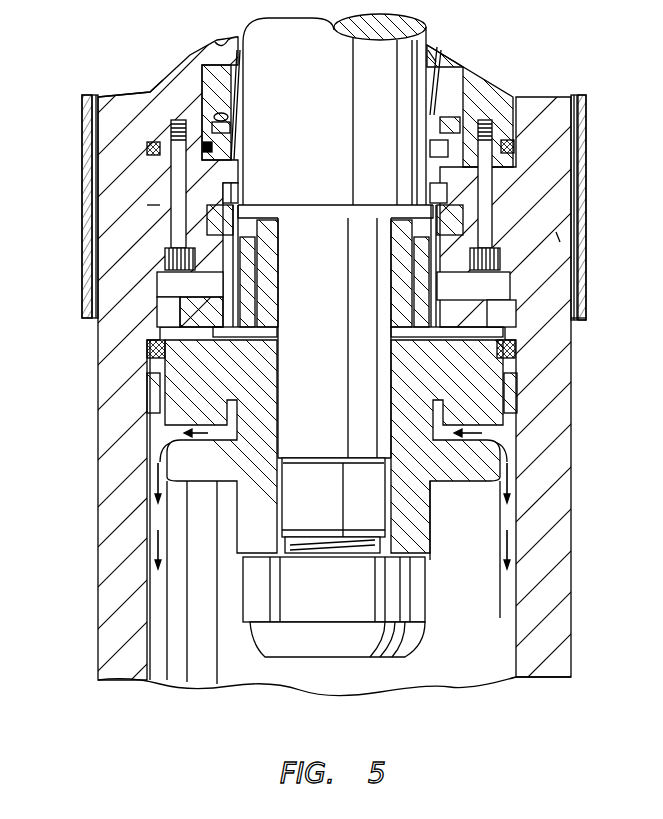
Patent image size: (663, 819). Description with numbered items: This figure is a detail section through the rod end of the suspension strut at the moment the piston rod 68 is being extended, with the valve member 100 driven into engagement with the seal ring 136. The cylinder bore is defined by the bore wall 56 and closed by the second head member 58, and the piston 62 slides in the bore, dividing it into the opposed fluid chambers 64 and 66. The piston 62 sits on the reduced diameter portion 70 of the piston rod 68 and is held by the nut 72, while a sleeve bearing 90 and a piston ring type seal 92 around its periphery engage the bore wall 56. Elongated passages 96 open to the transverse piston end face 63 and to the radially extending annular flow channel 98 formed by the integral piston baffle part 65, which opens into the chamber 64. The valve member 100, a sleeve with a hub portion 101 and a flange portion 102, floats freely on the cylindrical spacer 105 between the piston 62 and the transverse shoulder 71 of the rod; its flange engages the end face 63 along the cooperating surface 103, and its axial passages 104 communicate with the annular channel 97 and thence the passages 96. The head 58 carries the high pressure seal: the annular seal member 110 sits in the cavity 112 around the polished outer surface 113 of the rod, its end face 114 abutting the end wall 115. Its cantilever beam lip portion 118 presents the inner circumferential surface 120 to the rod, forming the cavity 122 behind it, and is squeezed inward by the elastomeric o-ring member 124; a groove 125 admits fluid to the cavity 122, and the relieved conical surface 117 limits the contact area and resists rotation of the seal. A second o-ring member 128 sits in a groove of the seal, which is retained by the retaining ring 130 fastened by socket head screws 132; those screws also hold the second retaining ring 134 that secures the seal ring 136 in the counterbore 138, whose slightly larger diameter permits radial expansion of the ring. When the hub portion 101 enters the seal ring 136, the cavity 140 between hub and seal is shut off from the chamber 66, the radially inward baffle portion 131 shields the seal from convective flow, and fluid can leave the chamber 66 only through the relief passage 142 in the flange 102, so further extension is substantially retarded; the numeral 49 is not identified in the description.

The outer cylinder wall 49 is at (102, 571).
The bore wall 56 is at (150, 615).
The second head member 58 is at (480, 80).
The piston 62 is at (425, 545).
The piston end face 63 is at (483, 317).
The fluid chamber 64 is at (217, 582).
The piston baffle part 65 is at (430, 495).
The fluid chamber 66 is at (190, 299).
The piston rod 68 is at (260, 24).
The reduced diameter portion 70 is at (333, 455).
The transverse shoulder 71 is at (330, 232).
The nut 72 is at (390, 640).
The sleeve bearing 90 is at (520, 405).
The piston ring type seal 92 is at (512, 348).
The passages 96 is at (262, 362).
The annular channel 97 is at (270, 334).
The annular flow channel 98 is at (512, 435).
The valve member 100 is at (560, 275).
The hub portion 101 is at (556, 238).
The flange portion 102 is at (565, 300).
The cooperating surface 103 is at (512, 385).
The passages 104 is at (427, 297).
The spacer 105 is at (395, 258).
The seal member 110 is at (205, 95).
The cavity 112 is at (470, 90).
The outer surface 113 is at (215, 42).
The end face 114 is at (447, 55).
The end wall 115 is at (430, 58).
The conical surface 117 is at (240, 78).
The cantilever beam lip portion 118 is at (437, 95).
The inner circumferential surface 120 is at (440, 122).
The cavity 122 is at (228, 116).
The o-ring member 124 is at (230, 130).
The groove 125 is at (155, 92).
The second o-ring member 128 is at (212, 147).
The retaining ring 130 is at (98, 180).
The baffle portion 131 is at (430, 150).
The socket head screws 132 is at (150, 150).
The second retaining ring 134 is at (165, 258).
The seal ring 136 is at (270, 215).
The counterbore 138 is at (150, 205).
The cavity 140 is at (232, 192).
The relief passage 142 is at (150, 330).